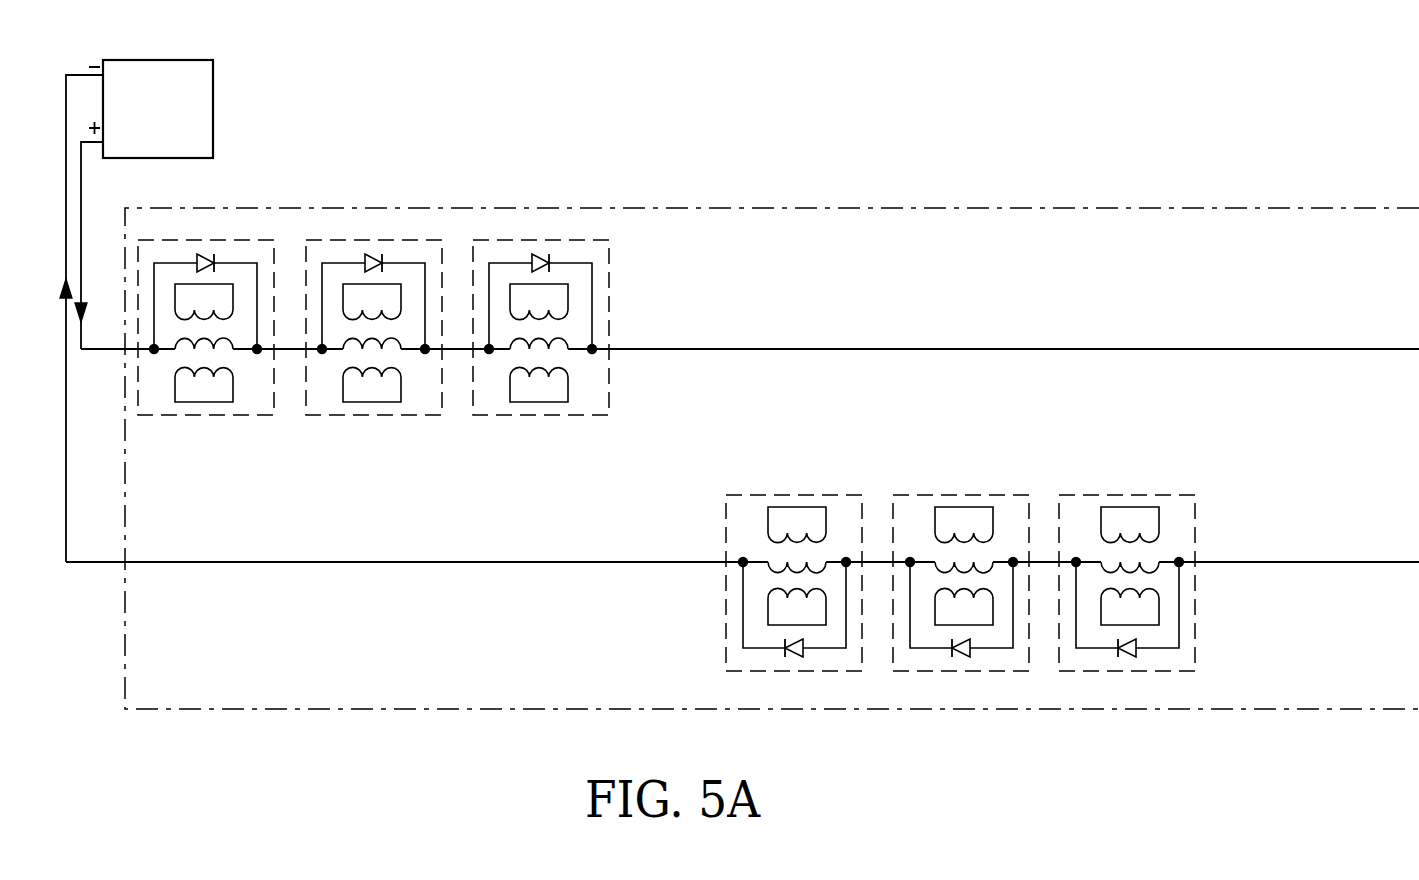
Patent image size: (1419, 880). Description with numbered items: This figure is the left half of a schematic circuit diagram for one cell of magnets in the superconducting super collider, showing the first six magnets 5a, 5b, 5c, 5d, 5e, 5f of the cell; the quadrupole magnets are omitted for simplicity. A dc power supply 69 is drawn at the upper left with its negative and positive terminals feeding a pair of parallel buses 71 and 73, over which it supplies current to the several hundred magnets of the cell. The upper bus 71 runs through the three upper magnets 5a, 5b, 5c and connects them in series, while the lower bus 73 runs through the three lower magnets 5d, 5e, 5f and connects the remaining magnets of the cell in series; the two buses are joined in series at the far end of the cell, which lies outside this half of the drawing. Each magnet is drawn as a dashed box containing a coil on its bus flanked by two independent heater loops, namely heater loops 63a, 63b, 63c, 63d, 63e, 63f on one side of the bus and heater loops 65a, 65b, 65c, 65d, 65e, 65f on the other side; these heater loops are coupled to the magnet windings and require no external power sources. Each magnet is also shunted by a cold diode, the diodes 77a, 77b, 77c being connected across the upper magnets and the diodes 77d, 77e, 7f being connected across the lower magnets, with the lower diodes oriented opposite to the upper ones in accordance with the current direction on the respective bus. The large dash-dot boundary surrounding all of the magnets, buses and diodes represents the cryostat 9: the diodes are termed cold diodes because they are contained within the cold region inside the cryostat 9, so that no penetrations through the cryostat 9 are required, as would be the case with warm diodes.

The dc power supply 69 is at (213, 93).
The cryostat 9 is at (726, 207).
The bus 71 is at (665, 348).
The bus 73 is at (208, 562).
The magnet 5a is at (209, 315).
The magnet 5b is at (375, 315).
The magnet 5c is at (548, 313).
The magnet 5d is at (786, 601).
The magnet 5e is at (961, 601).
The magnet 5f is at (1127, 601).
The cold diode 77a is at (206, 252).
The cold diode 77b is at (374, 252).
The cold diode 77c is at (541, 252).
The cold diode 77d is at (797, 660).
The cold diode 77e is at (964, 660).
The cold diode 7f is at (1130, 660).
The heater loop 63a is at (233, 288).
The heater loop 63b is at (401, 288).
The heater loop 63c is at (568, 288).
The heater loop 63d is at (768, 612).
The heater loop 63e is at (935, 612).
The heater loop 63f is at (1101, 612).
The heater loop 65a is at (193, 403).
The heater loop 65b is at (361, 403).
The heater loop 65c is at (528, 403).
The heater loop 65d is at (790, 507).
The heater loop 65e is at (957, 507).
The heater loop 65f is at (1123, 507).